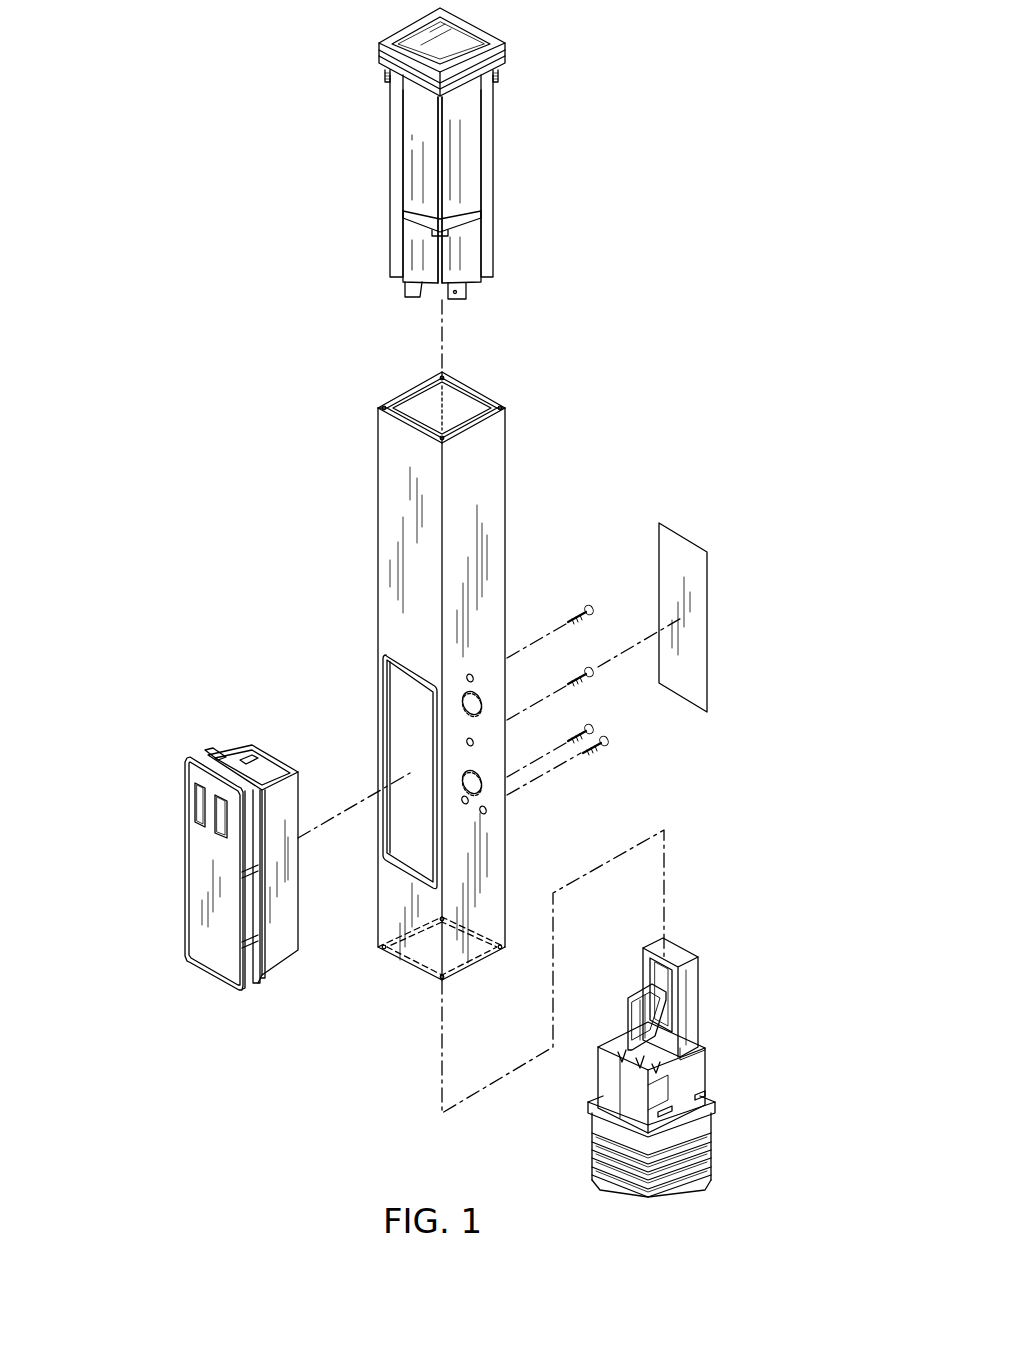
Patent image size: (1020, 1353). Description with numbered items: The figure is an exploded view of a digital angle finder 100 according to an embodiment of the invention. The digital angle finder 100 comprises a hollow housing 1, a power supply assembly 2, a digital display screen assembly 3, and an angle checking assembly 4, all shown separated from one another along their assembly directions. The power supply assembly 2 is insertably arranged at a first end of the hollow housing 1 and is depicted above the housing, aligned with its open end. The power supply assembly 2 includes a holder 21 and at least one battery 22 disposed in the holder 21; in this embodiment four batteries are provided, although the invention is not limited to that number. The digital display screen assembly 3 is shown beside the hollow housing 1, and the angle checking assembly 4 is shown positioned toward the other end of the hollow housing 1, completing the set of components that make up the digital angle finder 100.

The digital angle finder 100 is at (278, 655).
The hollow housing 1 is at (477, 503).
The power supply assembly 2 is at (350, 118).
The holder 21 is at (495, 201).
The battery 22 is at (410, 172).
The digital display screen assembly 3 is at (190, 880).
The angle checking assembly 4 is at (688, 942).